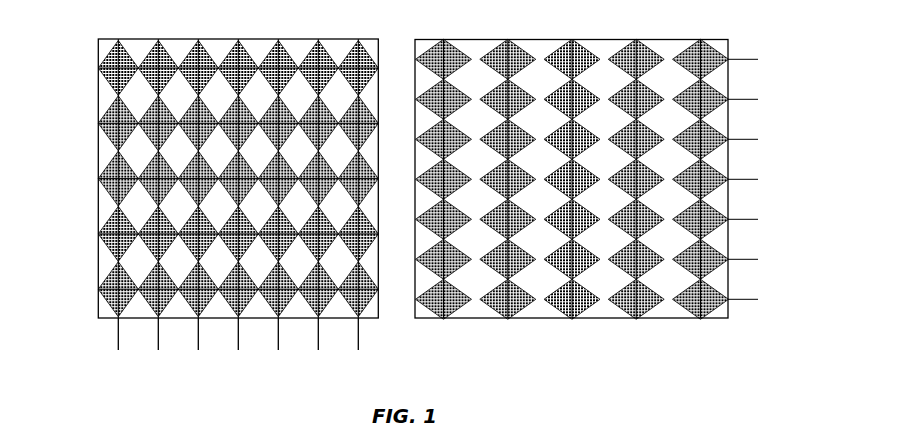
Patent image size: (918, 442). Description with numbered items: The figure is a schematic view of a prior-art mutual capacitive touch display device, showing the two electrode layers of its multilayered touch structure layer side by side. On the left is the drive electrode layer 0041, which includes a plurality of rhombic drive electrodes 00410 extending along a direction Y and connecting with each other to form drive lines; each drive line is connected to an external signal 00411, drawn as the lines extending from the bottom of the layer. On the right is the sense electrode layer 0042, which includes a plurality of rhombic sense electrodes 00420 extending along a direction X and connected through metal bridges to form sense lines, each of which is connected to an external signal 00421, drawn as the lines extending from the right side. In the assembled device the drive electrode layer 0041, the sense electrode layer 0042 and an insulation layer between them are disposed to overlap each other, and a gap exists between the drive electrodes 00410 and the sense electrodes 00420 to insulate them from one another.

The drive electrode layer 0041 is at (203, 174).
The rhombic drive electrodes 00410 is at (98, 70).
The external signal 00411 is at (225, 345).
The sense electrode layer 0042 is at (572, 164).
The rhombic sense electrodes 00420 is at (631, 47).
The external signal 00421 is at (758, 59).